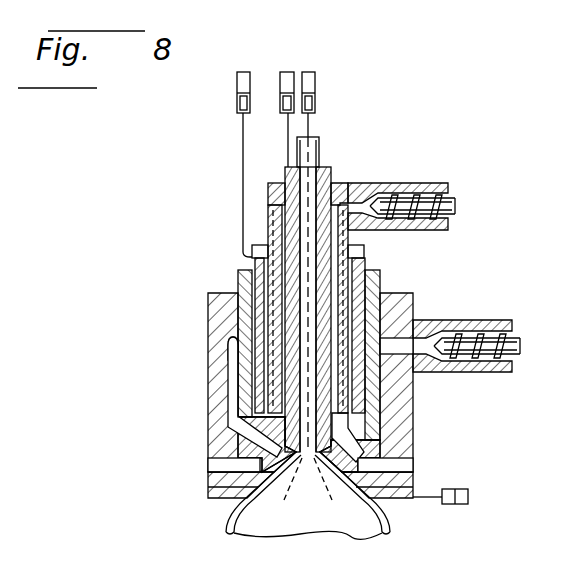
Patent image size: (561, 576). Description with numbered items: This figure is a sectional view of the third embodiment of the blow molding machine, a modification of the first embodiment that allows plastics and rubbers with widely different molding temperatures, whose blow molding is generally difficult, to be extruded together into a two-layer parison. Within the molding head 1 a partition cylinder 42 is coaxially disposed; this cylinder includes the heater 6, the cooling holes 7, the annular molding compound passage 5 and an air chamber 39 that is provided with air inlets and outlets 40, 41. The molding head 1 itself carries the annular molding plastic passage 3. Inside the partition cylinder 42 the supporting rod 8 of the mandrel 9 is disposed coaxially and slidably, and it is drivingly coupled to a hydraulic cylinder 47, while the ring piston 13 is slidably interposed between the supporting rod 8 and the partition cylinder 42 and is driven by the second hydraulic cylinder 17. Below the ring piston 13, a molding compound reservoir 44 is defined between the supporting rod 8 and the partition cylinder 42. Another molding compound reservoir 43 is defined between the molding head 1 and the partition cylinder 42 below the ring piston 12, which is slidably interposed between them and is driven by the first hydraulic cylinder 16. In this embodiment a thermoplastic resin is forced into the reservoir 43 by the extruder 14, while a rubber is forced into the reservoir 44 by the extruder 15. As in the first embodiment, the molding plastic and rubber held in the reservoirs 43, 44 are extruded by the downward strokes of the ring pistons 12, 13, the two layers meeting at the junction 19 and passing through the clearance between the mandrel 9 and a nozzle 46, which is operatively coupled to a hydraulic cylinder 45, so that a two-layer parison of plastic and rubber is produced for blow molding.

The extrusion head 1 is at (208, 308).
The annular molding plastic passage 3 is at (228, 345).
The annular molding plastic passage 5 is at (268, 208).
The heater 6 is at (368, 264).
The cooling holes 7 is at (268, 227).
The supporting rod 8 is at (322, 150).
The mandrel 9 is at (313, 488).
The first ring piston 12 is at (238, 278).
The second speed-variable ring piston 13 is at (288, 170).
The extruder 14 is at (492, 320).
The extruder 15 is at (420, 183).
The first hydraulic cylinder 16 is at (237, 80).
The second hydraulic cylinder 17 is at (282, 77).
The junction 19 is at (262, 467).
The air chamber 39 is at (352, 290).
The air inlet and outlet 40 is at (370, 255).
The air inlet and outlet 41 is at (250, 250).
The partition cylinder 42 is at (266, 186).
The molding compound reservoir 43 is at (244, 411).
The molding compound reservoir 44 is at (290, 424).
The hydraulic cylinder 45 is at (468, 489).
The nozzle 46 is at (398, 499).
The hydraulic cylinder 47 is at (316, 79).